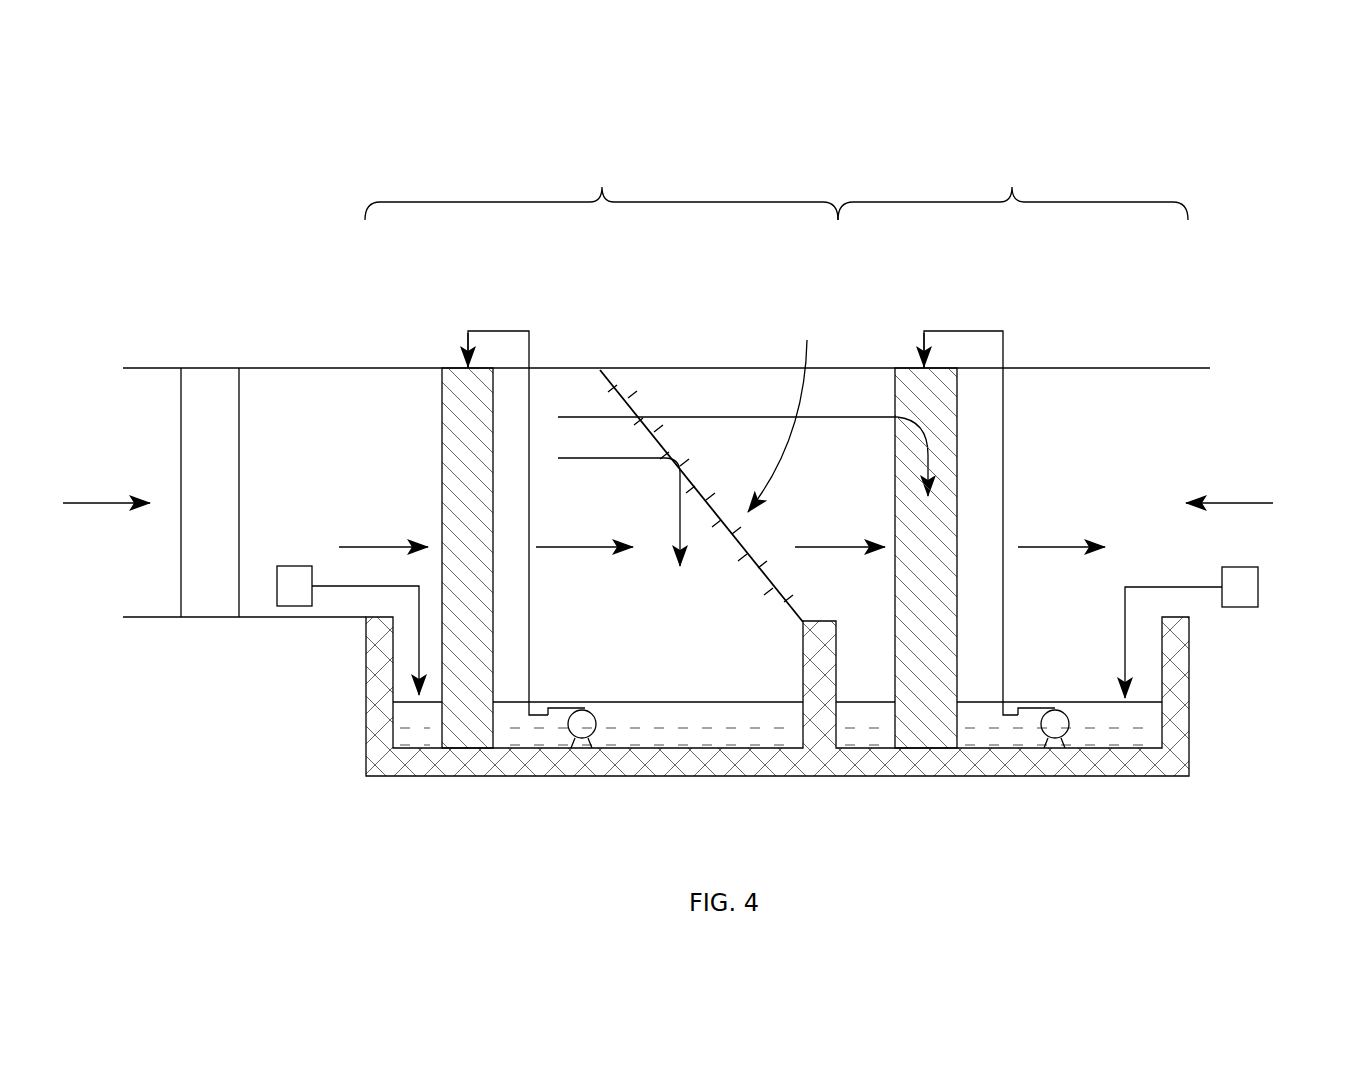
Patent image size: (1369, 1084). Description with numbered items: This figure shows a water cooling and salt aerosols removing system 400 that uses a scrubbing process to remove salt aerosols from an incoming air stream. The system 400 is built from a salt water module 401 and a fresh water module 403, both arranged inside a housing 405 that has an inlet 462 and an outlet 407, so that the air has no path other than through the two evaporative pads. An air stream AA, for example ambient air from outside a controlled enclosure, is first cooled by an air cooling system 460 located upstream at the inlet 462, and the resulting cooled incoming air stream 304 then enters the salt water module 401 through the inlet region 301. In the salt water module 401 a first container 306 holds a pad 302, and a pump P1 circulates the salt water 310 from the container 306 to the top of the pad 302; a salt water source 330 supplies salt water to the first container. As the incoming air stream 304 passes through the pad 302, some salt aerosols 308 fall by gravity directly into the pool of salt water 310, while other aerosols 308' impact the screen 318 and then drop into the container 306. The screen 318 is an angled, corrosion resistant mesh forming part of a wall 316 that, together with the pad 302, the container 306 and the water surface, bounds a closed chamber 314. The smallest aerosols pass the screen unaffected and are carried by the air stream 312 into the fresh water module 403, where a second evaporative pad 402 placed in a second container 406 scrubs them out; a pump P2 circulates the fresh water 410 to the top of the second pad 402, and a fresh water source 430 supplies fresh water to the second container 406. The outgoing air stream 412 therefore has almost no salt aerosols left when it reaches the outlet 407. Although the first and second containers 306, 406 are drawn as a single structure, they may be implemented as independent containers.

The water cooling and salt aerosols removing system 400 is at (1212, 114).
The salt water module 401 is at (601, 188).
The fresh water module 403 is at (1013, 188).
The housing 405 is at (331, 368).
The inlet 462 is at (151, 404).
The air cooling system 460 is at (211, 578).
The inlet chamber 301 is at (318, 420).
The air stream AA is at (100, 496).
The outlet 407 is at (1239, 500).
The incoming air stream 304 is at (385, 547).
The pad 302 is at (448, 364).
The salt water source 330 is at (297, 612).
The air stream 312 is at (548, 547).
The salt aerosols 308 is at (680, 514).
The screen 318 is at (632, 400).
The salt aerosols 308' is at (619, 438).
The wall 316 is at (785, 411).
The closed chamber 314 is at (648, 641).
The second evaporative pad 402 is at (905, 364).
The outgoing air stream 412 is at (1045, 547).
The fresh water source 430 is at (1258, 590).
The first container 306 is at (753, 776).
The second container 406 is at (1190, 735).
The salt water 310 is at (508, 735).
The fresh water 410 is at (1110, 738).
The pump P1 is at (603, 736).
The pump P2 is at (1054, 708).